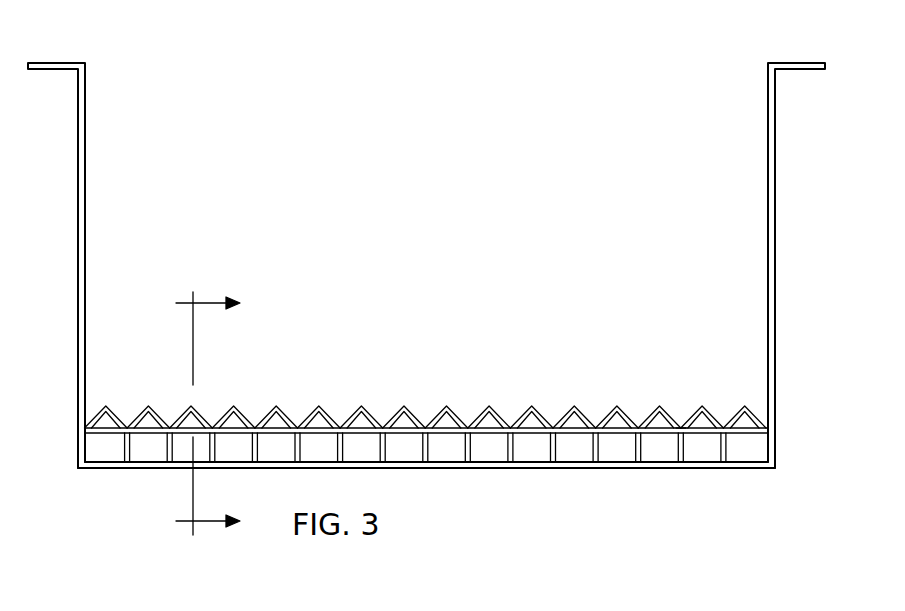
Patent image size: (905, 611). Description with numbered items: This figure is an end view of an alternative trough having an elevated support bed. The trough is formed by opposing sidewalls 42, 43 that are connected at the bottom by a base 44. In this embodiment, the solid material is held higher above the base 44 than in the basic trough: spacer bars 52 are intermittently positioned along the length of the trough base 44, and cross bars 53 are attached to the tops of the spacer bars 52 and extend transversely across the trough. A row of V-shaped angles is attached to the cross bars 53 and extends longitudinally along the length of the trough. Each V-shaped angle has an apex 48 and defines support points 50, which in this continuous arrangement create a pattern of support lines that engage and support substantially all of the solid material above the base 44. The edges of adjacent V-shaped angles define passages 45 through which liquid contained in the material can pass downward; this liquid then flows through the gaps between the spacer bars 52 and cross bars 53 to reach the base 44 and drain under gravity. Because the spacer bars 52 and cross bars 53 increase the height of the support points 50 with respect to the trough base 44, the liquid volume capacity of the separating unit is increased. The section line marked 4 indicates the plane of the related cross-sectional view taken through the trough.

The sidewall 42 is at (87, 140).
The sidewall 43 is at (770, 128).
The base 44 is at (623, 466).
The passages 45 is at (682, 424).
The apex 48 is at (437, 411).
The support points 50 is at (442, 416).
The spacer bars 52 is at (126, 450).
The cross bars 53 is at (531, 437).
The section line 4- 4 is at (208, 418).